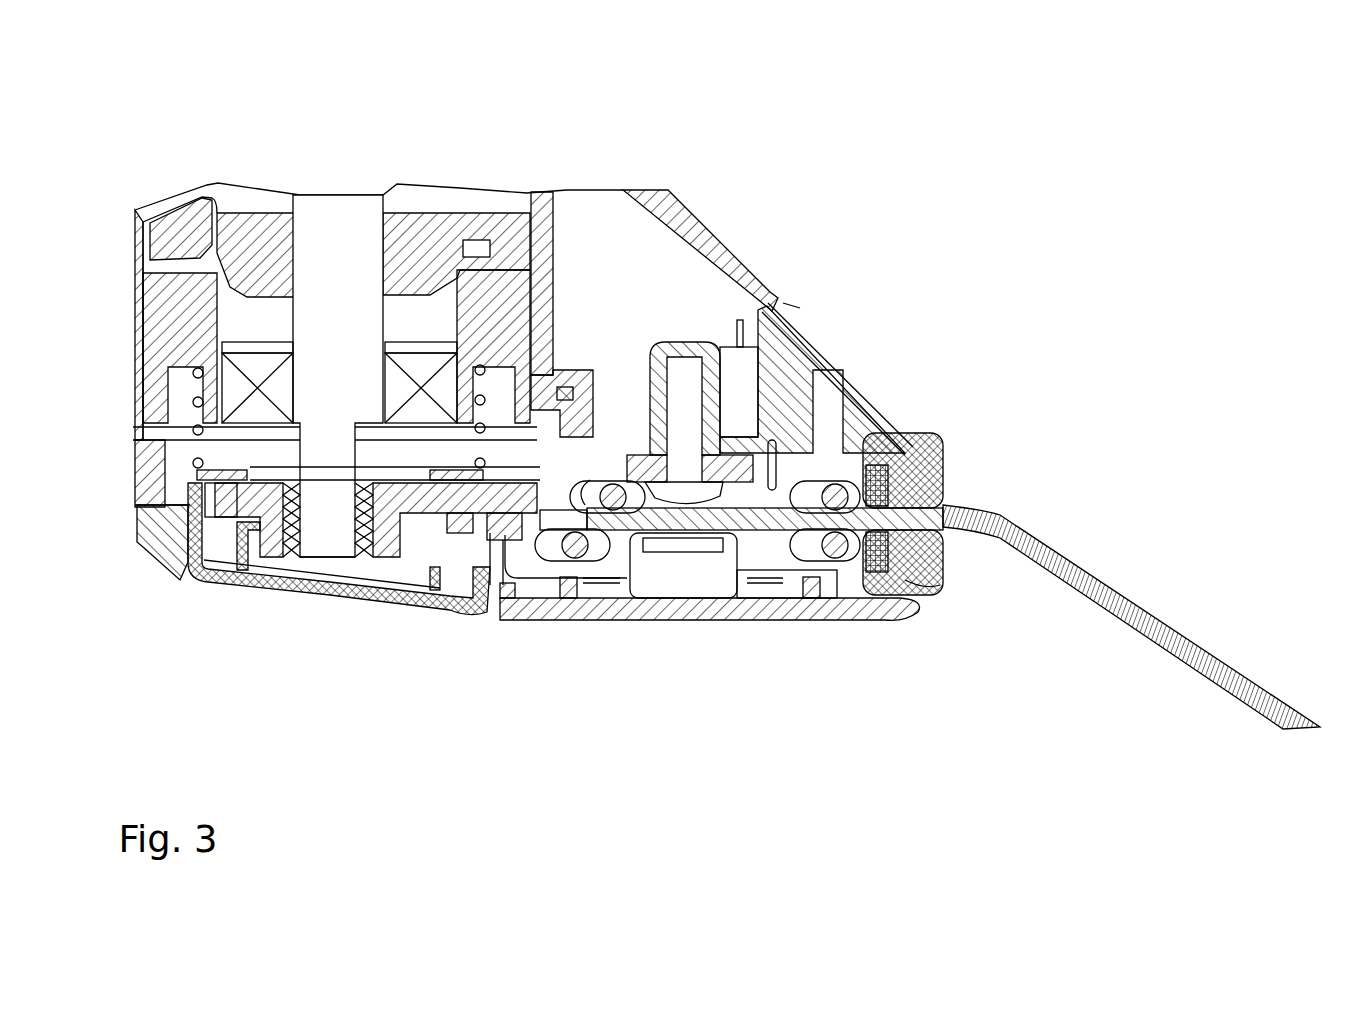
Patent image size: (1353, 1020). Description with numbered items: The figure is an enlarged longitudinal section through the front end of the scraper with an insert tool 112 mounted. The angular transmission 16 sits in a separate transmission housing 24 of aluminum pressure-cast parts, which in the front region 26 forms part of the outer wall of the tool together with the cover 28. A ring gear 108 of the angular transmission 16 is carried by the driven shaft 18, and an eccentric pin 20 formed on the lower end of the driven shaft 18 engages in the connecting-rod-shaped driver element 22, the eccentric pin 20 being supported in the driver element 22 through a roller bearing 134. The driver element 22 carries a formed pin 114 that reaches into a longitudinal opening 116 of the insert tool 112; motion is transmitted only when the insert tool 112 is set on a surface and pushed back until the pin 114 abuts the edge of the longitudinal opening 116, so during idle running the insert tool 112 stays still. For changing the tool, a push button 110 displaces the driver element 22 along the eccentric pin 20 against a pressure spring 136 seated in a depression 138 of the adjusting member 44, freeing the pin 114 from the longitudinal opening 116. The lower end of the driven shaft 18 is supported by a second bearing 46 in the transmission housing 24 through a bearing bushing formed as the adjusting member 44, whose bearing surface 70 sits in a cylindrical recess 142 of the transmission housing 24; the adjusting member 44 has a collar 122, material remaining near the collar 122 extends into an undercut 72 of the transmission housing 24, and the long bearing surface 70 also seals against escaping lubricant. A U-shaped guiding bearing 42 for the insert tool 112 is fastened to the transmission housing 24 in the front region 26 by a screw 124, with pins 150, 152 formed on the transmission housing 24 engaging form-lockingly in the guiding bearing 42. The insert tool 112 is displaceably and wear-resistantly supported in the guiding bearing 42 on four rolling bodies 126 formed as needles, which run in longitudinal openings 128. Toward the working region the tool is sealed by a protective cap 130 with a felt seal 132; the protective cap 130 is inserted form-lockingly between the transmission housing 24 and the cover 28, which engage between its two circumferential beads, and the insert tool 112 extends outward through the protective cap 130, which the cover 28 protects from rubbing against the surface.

The angular transmission 16 is at (452, 181).
The driven shaft 18 is at (352, 235).
The eccentric pin 20 is at (333, 530).
The driver element 22 is at (422, 497).
The transmission housing 24 is at (541, 200).
The front region 26 is at (914, 742).
The cover 28 is at (878, 608).
The guiding bearing 42 is at (598, 567).
The adjusting member 44 is at (540, 288).
The second bearing 46 is at (217, 512).
The bearing surface 70 is at (140, 372).
The undercut 72 is at (563, 395).
The ring gear 108 is at (263, 235).
The push button 110 is at (290, 560).
The insert tool 112 is at (1085, 563).
The pin 114 is at (508, 503).
The longitudinal opening 116 is at (567, 523).
The collar 122 is at (598, 465).
The screw 124 is at (682, 398).
The rolling bodies 126 is at (608, 530).
The longitudinal openings 128 is at (556, 542).
The protective cap 130 is at (945, 455).
The felt seal 132 is at (937, 587).
The roller bearing 134 is at (290, 547).
The pressure spring 136 is at (150, 540).
The depression 138 is at (178, 383).
The cylindrical recess 142 is at (148, 265).
The pin 150 is at (760, 352).
The pin 152 is at (850, 405).